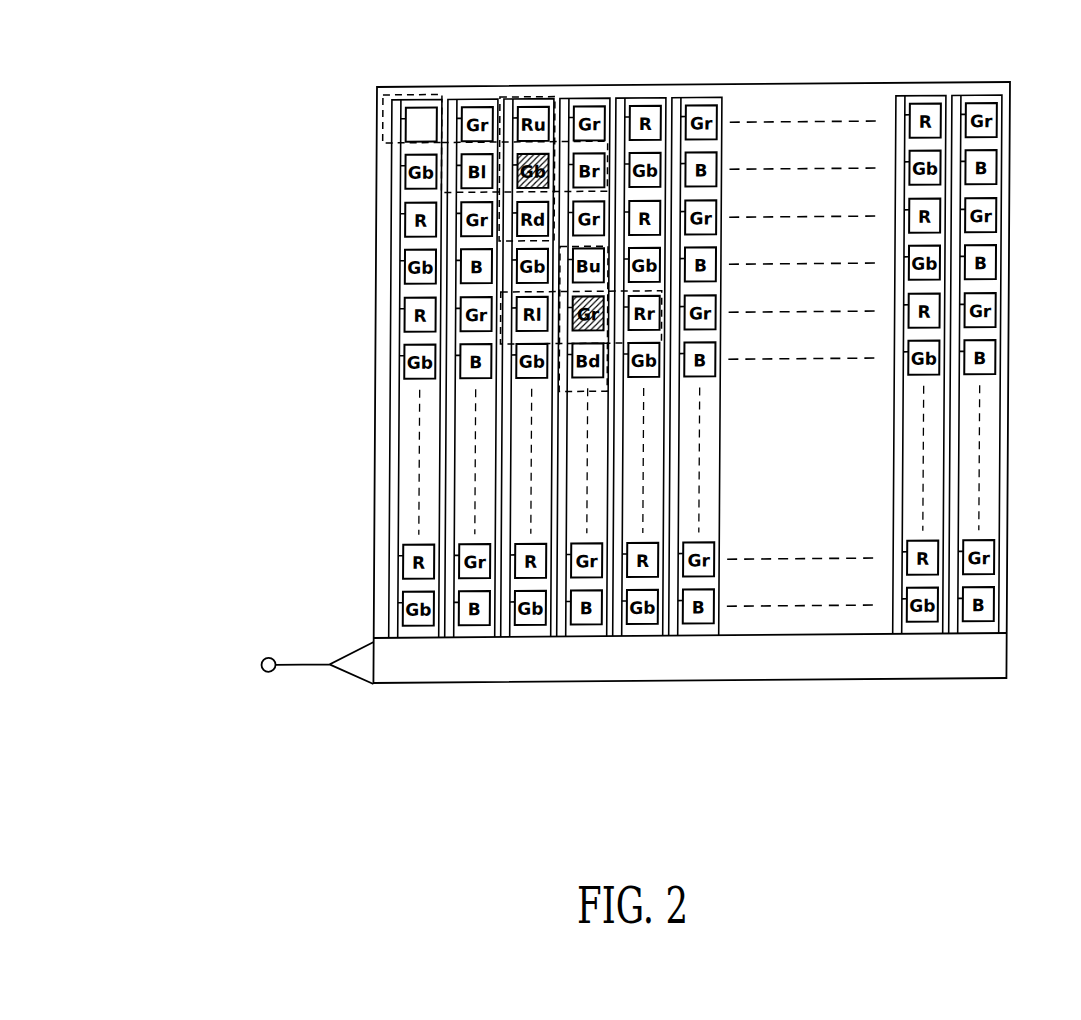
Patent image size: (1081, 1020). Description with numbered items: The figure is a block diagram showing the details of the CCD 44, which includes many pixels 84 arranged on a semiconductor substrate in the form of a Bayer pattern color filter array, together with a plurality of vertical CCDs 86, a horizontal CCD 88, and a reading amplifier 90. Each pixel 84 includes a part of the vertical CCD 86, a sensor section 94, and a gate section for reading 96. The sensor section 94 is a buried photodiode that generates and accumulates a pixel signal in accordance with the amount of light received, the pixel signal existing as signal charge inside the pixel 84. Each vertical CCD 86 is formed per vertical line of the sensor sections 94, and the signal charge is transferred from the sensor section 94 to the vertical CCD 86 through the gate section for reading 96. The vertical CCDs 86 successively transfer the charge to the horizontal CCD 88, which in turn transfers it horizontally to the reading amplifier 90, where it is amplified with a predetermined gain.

The CCD 44 is at (957, 711).
The pixel 84 is at (383, 137).
The vertical CCD 86 is at (393, 410).
The horizontal CCD 88 is at (858, 680).
The reading amplifier 90 is at (347, 680).
The sensor section 94 is at (438, 105).
The gate section for reading 96 is at (403, 107).